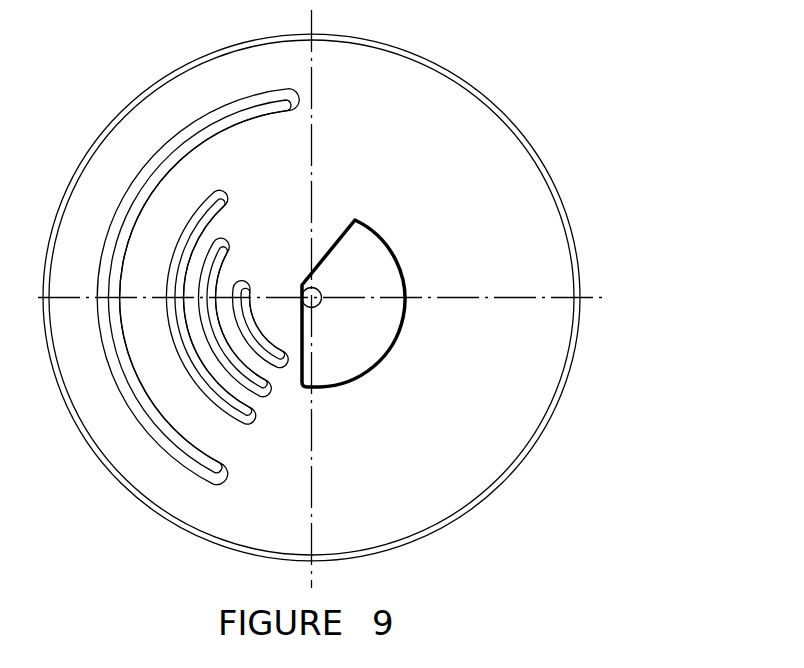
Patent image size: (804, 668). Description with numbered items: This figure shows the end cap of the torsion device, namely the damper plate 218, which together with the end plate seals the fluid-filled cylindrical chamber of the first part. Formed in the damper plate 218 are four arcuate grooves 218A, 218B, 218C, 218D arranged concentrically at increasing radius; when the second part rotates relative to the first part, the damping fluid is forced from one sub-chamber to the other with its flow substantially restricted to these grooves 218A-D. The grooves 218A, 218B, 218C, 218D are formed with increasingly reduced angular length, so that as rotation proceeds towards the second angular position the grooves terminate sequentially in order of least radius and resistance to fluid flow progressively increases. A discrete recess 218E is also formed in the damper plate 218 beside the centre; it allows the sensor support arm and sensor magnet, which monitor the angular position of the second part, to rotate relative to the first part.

The damper plate 218 is at (555, 402).
The groove 218A is at (249, 278).
The groove 218B is at (231, 243).
The groove 218C is at (224, 195).
The groove 218D is at (295, 99).
The discrete recess 218E is at (390, 250).